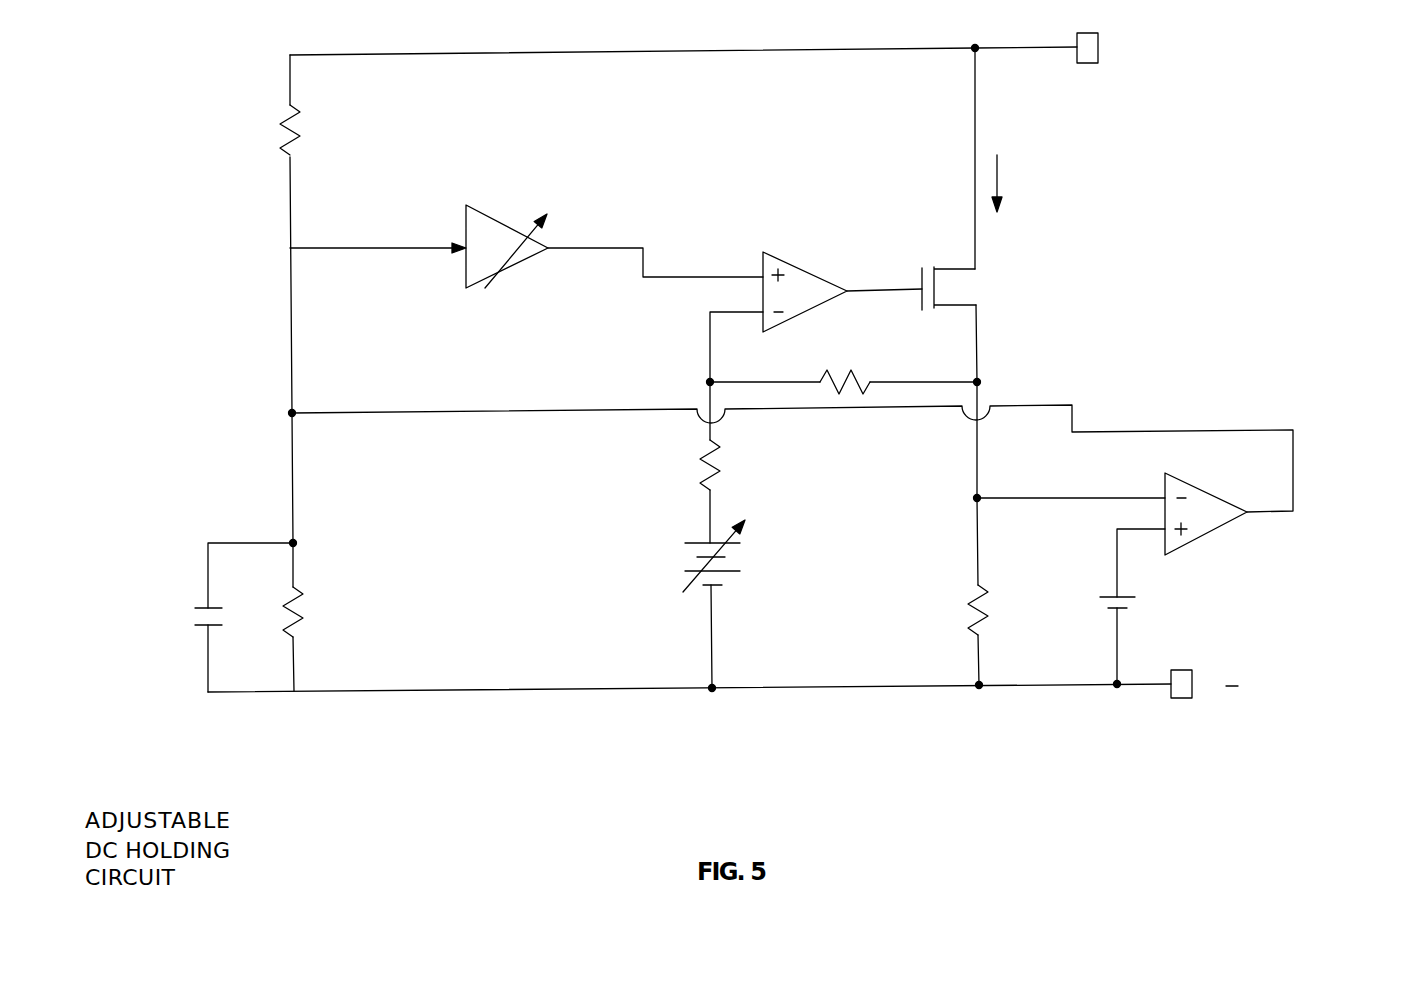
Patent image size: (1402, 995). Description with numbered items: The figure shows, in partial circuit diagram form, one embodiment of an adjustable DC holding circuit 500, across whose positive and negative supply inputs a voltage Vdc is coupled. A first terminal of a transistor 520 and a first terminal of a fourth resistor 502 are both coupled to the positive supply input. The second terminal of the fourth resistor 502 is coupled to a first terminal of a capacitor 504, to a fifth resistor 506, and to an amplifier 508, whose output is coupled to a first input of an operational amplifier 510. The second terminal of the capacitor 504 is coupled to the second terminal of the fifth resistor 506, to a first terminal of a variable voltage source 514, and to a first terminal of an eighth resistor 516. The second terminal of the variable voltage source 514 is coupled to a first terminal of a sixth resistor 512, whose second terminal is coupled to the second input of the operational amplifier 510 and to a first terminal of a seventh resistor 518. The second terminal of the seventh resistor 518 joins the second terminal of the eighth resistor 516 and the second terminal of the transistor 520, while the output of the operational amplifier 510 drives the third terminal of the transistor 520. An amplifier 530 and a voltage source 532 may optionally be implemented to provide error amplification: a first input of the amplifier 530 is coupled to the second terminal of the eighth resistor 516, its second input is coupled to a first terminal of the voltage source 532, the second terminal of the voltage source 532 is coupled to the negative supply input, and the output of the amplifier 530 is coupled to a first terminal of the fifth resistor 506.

The adjustable DC holding circuit 500 is at (1360, 190).
The resistor R4 502 is at (302, 148).
The capacitor C2 504 is at (215, 605).
The resistor R5 506 is at (307, 637).
The amplifier 508 is at (482, 210).
The operational amplifier 510 is at (780, 256).
The resistor R6 512 is at (705, 480).
The variable voltage source 514 is at (722, 595).
The resistor R8 516 is at (992, 633).
The resistor R7 518 is at (870, 368).
The transistor 520 is at (950, 268).
The amplifier 530 is at (1180, 478).
The voltage source 532 is at (1127, 615).